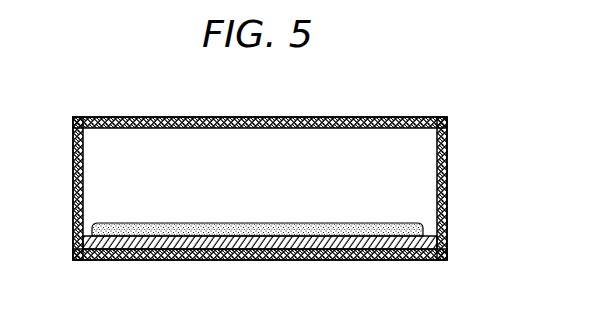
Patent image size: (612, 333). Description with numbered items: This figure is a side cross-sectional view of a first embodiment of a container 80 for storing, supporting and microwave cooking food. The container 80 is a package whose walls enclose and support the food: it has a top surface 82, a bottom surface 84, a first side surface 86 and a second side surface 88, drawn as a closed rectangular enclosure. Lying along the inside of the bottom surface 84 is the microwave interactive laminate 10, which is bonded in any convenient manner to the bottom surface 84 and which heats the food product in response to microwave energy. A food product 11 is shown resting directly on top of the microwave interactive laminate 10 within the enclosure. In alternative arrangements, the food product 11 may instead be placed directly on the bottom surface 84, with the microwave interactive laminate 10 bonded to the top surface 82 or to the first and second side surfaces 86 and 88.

The container 80 is at (498, 117).
The top surface 82 is at (393, 117).
The bottom surface 84 is at (330, 260).
The first side surface 86 is at (447, 200).
The second side surface 88 is at (73, 178).
The microwave interactive laminate 10 is at (175, 260).
The food product 11 is at (316, 222).